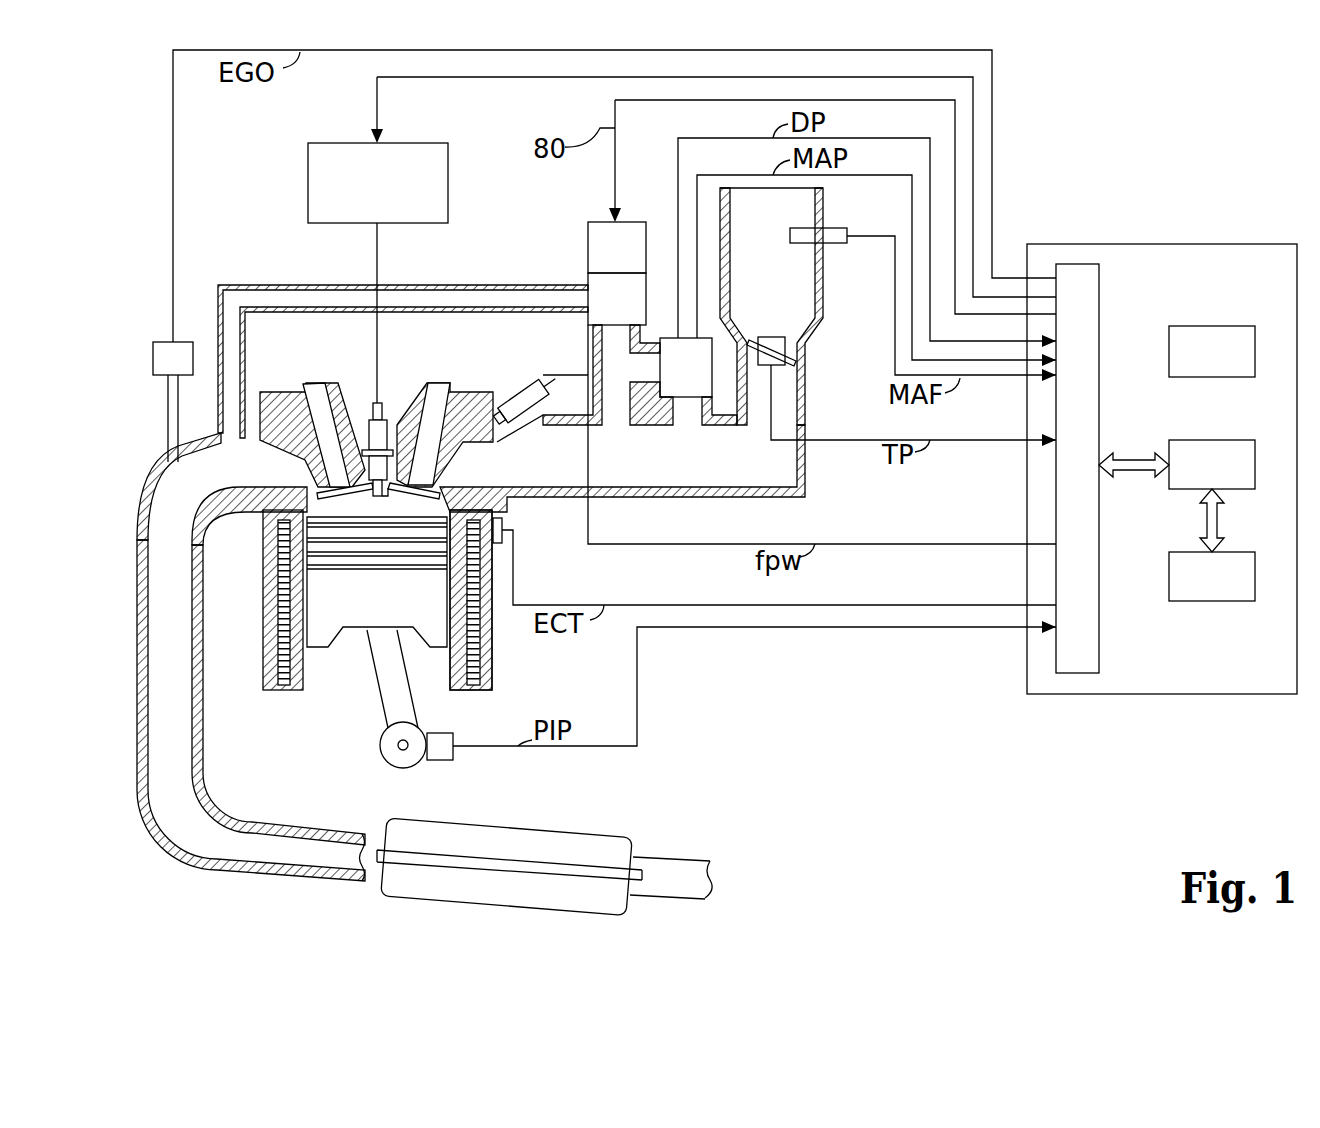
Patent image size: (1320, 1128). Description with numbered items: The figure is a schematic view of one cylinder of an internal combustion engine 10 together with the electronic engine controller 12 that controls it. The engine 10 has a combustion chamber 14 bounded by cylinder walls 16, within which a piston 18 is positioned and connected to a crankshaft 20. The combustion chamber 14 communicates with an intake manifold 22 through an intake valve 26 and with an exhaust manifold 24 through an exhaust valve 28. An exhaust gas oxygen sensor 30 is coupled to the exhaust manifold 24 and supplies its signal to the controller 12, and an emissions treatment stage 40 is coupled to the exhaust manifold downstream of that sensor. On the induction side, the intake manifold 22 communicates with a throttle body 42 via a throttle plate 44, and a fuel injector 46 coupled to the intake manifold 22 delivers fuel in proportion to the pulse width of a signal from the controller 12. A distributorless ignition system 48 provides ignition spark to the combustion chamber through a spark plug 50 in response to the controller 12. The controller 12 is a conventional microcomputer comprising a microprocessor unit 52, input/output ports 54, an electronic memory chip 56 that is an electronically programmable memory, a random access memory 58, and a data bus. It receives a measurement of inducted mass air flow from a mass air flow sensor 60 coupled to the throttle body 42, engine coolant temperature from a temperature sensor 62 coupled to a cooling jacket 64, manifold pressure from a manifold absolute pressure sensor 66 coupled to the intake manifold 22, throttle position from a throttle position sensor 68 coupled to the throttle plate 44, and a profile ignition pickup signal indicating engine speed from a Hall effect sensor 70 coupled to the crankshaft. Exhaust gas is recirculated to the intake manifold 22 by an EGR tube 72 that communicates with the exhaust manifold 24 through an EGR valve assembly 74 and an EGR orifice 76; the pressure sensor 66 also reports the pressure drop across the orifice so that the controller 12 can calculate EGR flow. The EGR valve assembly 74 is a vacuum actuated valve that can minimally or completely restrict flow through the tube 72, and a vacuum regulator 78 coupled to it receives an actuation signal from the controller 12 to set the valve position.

The internal combustion engine 10 is at (296, 778).
The electronic engine controller 12 is at (1258, 246).
The combustion chamber 14 is at (367, 507).
The cylinder walls 16 is at (312, 670).
The piston 18 is at (380, 617).
The crankshaft 20 is at (403, 762).
The intake manifold 22 is at (726, 474).
The exhaust manifold 24 is at (170, 497).
The intake valve 26 is at (430, 480).
The exhaust valve 28 is at (327, 478).
The exhaust gas oxygen sensor 30 is at (155, 340).
The emissions treatment stage 40 is at (597, 826).
The throttle body 42 is at (792, 216).
The throttle plate 44 is at (752, 340).
The fuel injector 46 is at (525, 395).
The distributorless ignition system 48 is at (410, 144).
The spark plug 50 is at (381, 403).
The microprocessor unit 52 is at (1205, 440).
The input/output ports 54 is at (1102, 311).
The electronic memory chip 56 is at (1206, 328).
The random access memory 58 is at (1240, 552).
The mass air flow sensor 60 is at (830, 245).
The temperature sensor 62 is at (505, 525).
The cooling jacket 64 is at (477, 652).
The manifold absolute pressure sensor 66 is at (672, 384).
The throttle position sensor 68 is at (772, 337).
The Hall effect sensor 70 is at (437, 732).
The EGR tube 72 is at (272, 293).
The EGR valve assembly 74 is at (603, 314).
The EGR orifice 76 is at (613, 390).
The vacuum regulator 78 is at (603, 260).